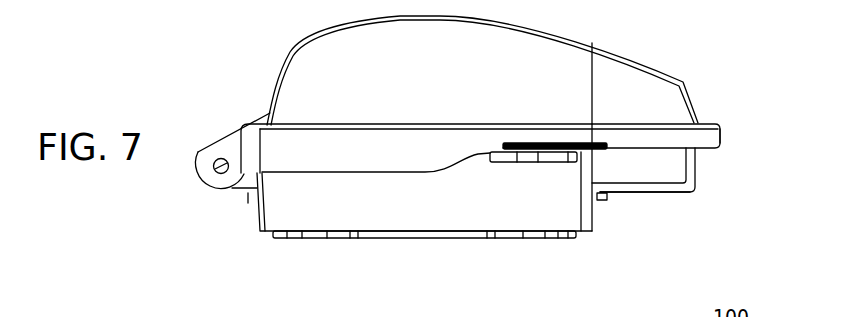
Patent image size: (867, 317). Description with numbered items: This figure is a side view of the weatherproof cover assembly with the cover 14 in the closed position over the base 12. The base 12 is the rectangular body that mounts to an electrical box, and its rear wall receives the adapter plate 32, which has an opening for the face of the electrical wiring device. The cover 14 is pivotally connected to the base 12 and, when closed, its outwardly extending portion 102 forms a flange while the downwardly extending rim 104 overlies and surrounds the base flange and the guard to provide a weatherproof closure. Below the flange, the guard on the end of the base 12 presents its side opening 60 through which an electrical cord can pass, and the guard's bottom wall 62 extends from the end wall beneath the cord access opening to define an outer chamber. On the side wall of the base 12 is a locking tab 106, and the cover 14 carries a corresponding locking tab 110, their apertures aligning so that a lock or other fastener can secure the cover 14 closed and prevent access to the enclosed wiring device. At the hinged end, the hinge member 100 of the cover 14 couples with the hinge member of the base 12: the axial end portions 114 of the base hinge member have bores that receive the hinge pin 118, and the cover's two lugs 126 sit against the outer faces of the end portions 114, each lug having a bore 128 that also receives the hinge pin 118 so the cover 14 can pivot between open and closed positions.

The base 12 is at (592, 232).
The cover 14 is at (624, 50).
The adapter plate 32 is at (503, 241).
The side opening 60 is at (657, 172).
The bottom wall 62 is at (652, 194).
The hinge member 100 is at (222, 137).
The outwardly extending portion 102 is at (707, 124).
The rim 104 is at (722, 138).
The locking tab 106 is at (492, 157).
The locking tab 110 is at (517, 147).
The axial end portions 114 is at (248, 193).
The hinge pin 118 is at (219, 174).
The lugs 126 is at (223, 148).
The bore 128 is at (213, 168).